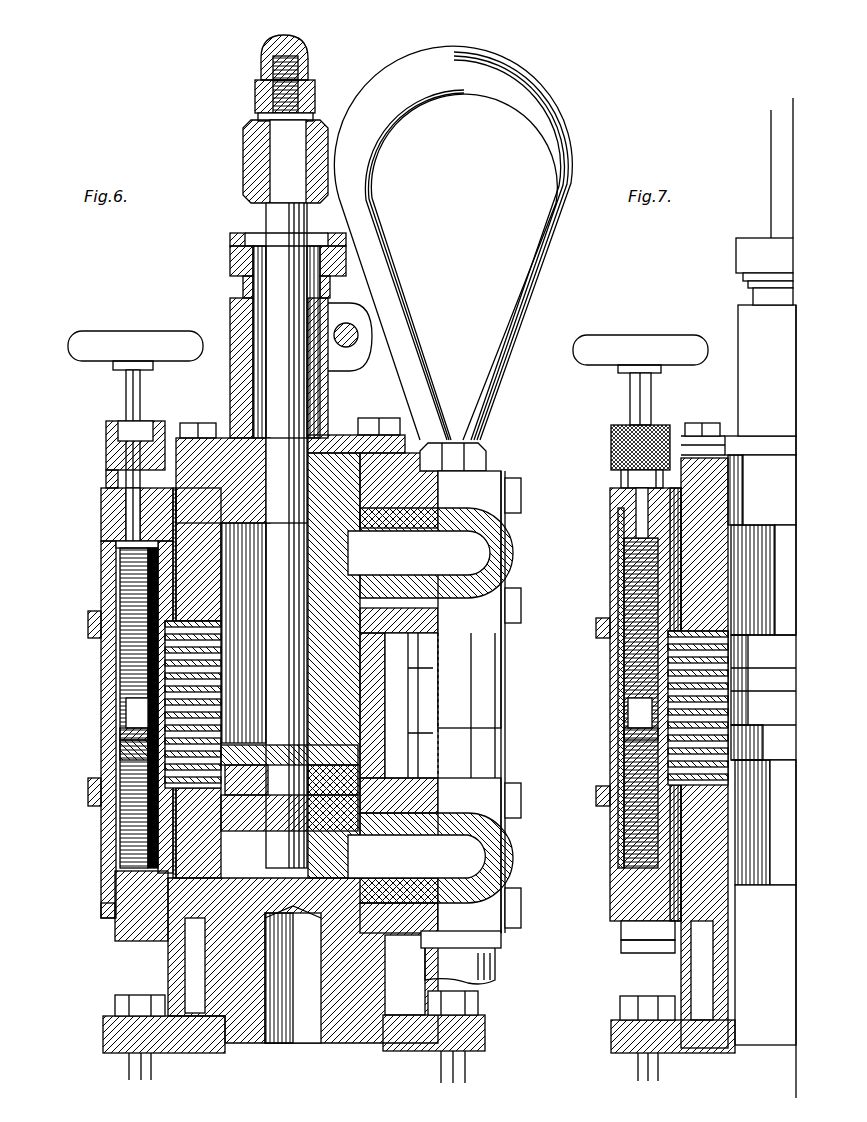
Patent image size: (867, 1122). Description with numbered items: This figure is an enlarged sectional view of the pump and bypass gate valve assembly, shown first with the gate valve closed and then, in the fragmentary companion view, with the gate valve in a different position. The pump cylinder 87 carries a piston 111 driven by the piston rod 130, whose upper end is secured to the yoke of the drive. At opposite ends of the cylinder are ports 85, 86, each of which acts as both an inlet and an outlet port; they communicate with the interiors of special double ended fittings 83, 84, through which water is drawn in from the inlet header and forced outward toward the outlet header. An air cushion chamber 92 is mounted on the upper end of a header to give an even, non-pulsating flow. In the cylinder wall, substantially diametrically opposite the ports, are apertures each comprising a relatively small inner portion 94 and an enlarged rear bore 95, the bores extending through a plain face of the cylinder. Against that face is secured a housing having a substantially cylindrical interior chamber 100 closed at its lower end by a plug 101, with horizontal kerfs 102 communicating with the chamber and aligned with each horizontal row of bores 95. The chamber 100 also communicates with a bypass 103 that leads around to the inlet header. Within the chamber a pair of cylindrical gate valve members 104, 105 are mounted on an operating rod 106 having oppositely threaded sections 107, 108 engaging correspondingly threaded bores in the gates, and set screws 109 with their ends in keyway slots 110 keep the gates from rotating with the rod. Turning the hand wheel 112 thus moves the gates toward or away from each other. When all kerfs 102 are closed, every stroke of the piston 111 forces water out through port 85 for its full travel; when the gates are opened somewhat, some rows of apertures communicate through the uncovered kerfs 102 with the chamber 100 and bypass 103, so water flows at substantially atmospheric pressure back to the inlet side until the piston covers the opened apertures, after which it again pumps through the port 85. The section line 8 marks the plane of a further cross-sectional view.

In FIG. 6, the section line 8- 8 is at (557, 538).
In FIG. 6, the double ended fitting 83 is at (493, 535).
In FIG. 6, the double ended fitting 84 is at (490, 840).
In FIG. 6, the port 85 is at (453, 470).
In FIG. 6, the port 86 is at (416, 856).
In FIG. 6, the pump cylinder 87 is at (360, 600).
In FIG. 7, the pump cylinder 87 is at (700, 845).
In FIG. 6, the air cushion chamber 92 is at (453, 243).
In FIG. 6, the inner portion of aperture 94 is at (215, 618).
In FIG. 7, the inner portion of aperture 94 is at (725, 660).
In FIG. 6, the rear bore 95 is at (232, 620).
In FIG. 7, the rear bore 95 is at (725, 612).
In FIG. 6, the interior chamber 100 is at (100, 840).
In FIG. 7, the interior chamber 100 is at (625, 705).
In FIG. 6, the plug 101 is at (105, 915).
In FIG. 7, the plug 101 is at (630, 915).
In FIG. 6, the kerf 102 is at (118, 588).
In FIG. 7, the bypass 103 is at (600, 690).
In FIG. 6, the gate valve member 104 is at (118, 730).
In FIG. 7, the gate valve member 104 is at (607, 818).
In FIG. 6, the gate valve member 105 is at (112, 680).
In FIG. 7, the gate valve member 105 is at (610, 585).
In FIG. 6, the operating rod 106 is at (120, 705).
In FIG. 7, the operating rod 106 is at (605, 740).
In FIG. 6, the threaded section 107 is at (85, 780).
In FIG. 6, the threaded section 108 is at (100, 552).
In FIG. 6, the set screw 109 is at (80, 618).
In FIG. 6, the keyway slot 110 is at (115, 750).
In FIG. 6, the piston 111 is at (300, 760).
In FIG. 6, the hand wheel 112 is at (105, 348).
In FIG. 7, the hand wheel 112 is at (612, 350).
In FIG. 6, the piston rod 130 is at (250, 430).